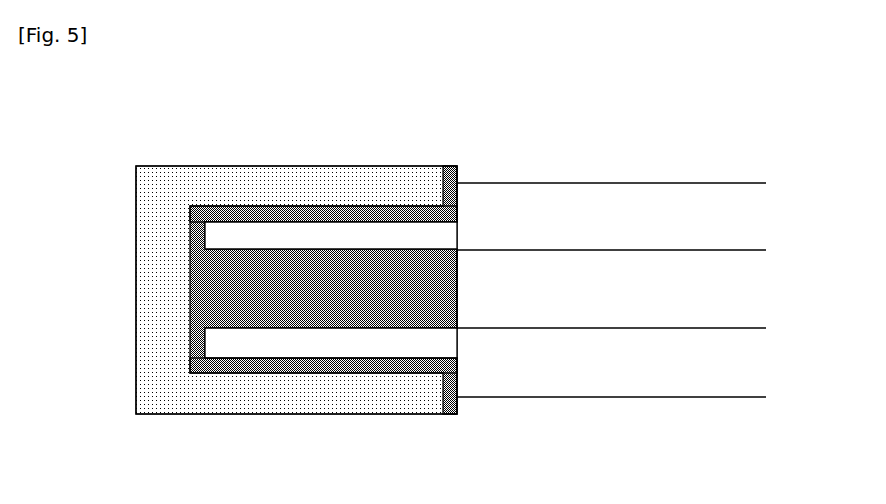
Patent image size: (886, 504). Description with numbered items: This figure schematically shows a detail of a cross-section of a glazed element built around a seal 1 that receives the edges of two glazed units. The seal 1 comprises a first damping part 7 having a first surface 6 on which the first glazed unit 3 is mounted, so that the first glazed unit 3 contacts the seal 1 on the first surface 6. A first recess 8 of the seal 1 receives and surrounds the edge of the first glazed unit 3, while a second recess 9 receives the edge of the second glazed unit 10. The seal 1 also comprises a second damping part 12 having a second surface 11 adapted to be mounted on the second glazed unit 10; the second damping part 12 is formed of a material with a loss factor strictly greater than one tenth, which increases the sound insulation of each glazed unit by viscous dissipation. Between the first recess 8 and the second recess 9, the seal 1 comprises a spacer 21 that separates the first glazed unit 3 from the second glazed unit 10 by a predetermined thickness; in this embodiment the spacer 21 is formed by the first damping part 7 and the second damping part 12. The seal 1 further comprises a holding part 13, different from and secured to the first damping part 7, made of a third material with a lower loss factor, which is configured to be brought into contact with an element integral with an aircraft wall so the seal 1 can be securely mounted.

The seal 1 is at (196, 190).
The first glazed unit 3 is at (727, 200).
The first surface 6 is at (372, 215).
The first damping part 7 is at (275, 200).
The first recess 8 is at (310, 230).
The second recess 9 is at (288, 345).
The second glazed unit 10 is at (727, 338).
The second surface 11 is at (340, 358).
The second damping part 12 is at (233, 372).
The holding part 13 is at (415, 183).
The spacer 21 is at (440, 300).